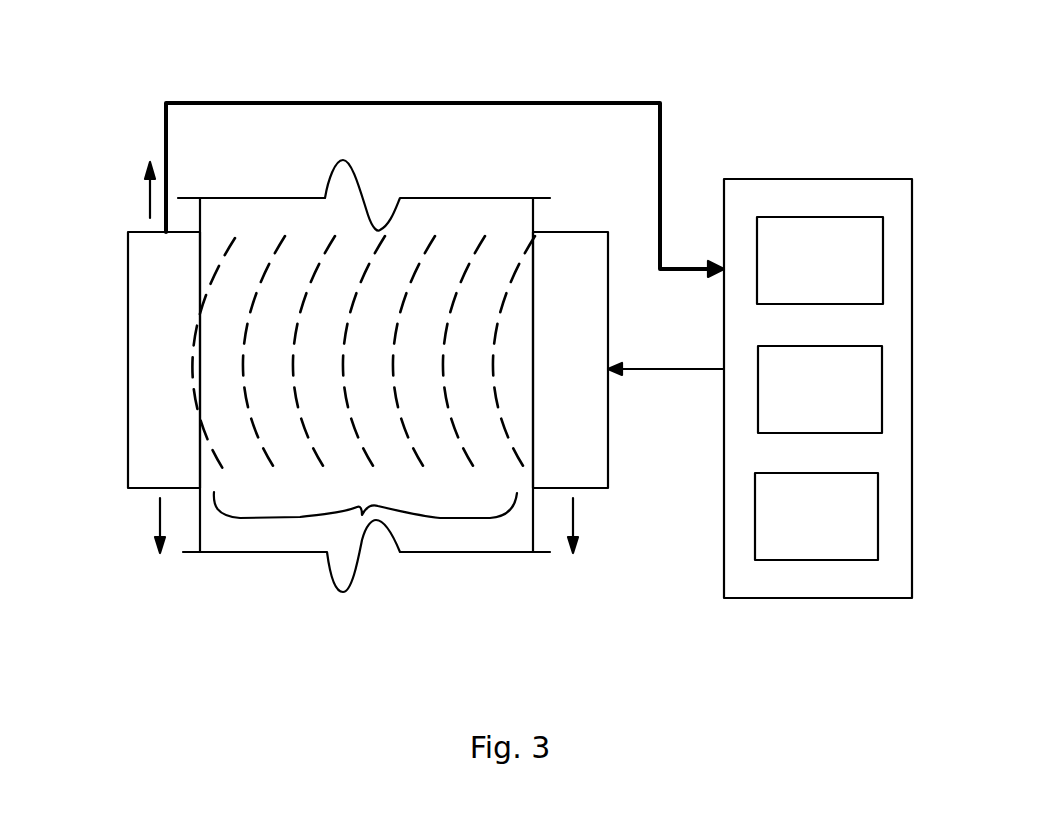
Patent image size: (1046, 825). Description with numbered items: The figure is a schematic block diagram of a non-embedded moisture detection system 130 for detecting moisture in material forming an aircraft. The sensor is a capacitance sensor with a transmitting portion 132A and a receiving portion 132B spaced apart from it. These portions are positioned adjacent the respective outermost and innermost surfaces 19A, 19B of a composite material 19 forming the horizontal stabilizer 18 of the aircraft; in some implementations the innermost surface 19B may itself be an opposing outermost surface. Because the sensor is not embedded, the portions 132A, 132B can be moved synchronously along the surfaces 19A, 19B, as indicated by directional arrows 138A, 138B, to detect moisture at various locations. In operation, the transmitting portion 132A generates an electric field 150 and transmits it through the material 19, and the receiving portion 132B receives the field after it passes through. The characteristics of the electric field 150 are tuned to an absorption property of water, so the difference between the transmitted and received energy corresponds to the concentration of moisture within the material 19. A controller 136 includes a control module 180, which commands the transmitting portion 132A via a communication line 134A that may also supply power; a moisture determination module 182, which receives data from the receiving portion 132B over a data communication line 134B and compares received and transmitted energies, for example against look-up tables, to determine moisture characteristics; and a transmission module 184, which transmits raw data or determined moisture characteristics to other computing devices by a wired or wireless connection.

The non-embedded moisture detection system 130 is at (700, 114).
The transmitting portion 132A is at (570, 248).
The receiving portion 132B is at (143, 229).
The communication line 134A is at (673, 370).
The data communication line 134B is at (311, 102).
The controller 136 is at (800, 209).
The directional arrow 138A is at (160, 517).
The directional arrow 138B is at (148, 184).
The horizontal stabilizer 18 is at (253, 213).
The composite material 19 is at (350, 359).
The outermost surface 19A is at (533, 217).
The innermost surface 19B is at (200, 218).
The electric field 150 is at (362, 515).
The control module 180 is at (800, 268).
The moisture determination module 182 is at (802, 398).
The transmission module 184 is at (800, 529).